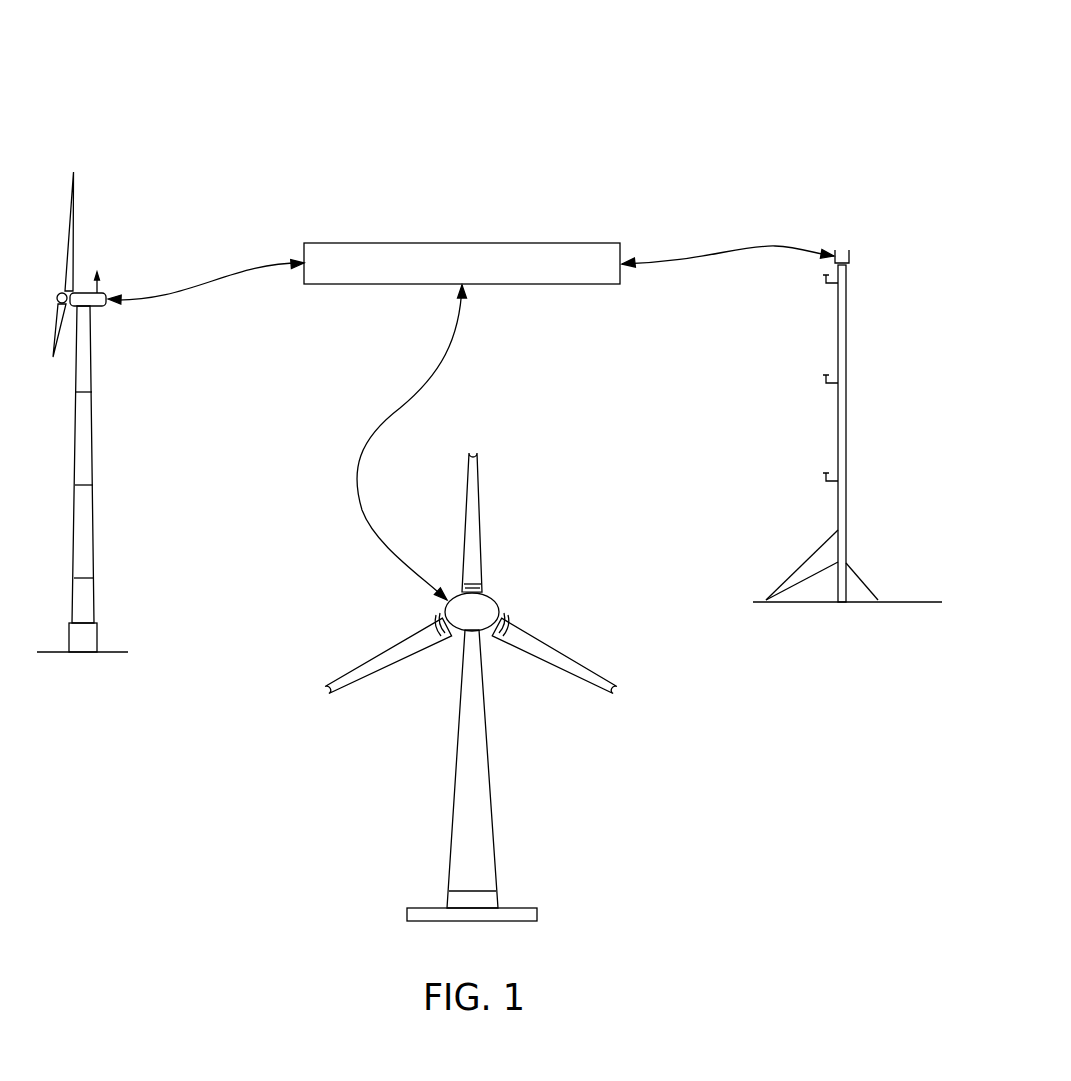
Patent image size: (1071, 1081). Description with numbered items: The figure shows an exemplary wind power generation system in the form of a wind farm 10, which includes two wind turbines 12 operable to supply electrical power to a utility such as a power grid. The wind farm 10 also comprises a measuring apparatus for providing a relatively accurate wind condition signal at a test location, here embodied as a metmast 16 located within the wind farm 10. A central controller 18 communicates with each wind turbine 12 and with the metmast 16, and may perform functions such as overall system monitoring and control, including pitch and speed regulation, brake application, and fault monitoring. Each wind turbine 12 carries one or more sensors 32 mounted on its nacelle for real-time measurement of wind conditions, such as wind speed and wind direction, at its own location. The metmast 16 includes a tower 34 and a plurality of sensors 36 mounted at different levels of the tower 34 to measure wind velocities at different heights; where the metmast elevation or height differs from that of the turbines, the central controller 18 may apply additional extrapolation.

The wind farm 10 is at (810, 53).
The wind turbine 12 is at (327, 546).
The metmast 16 is at (847, 426).
The central controller 18 is at (553, 243).
The sensor 32 is at (97, 272).
The tower 34 is at (846, 338).
The sensors 36 is at (826, 281).